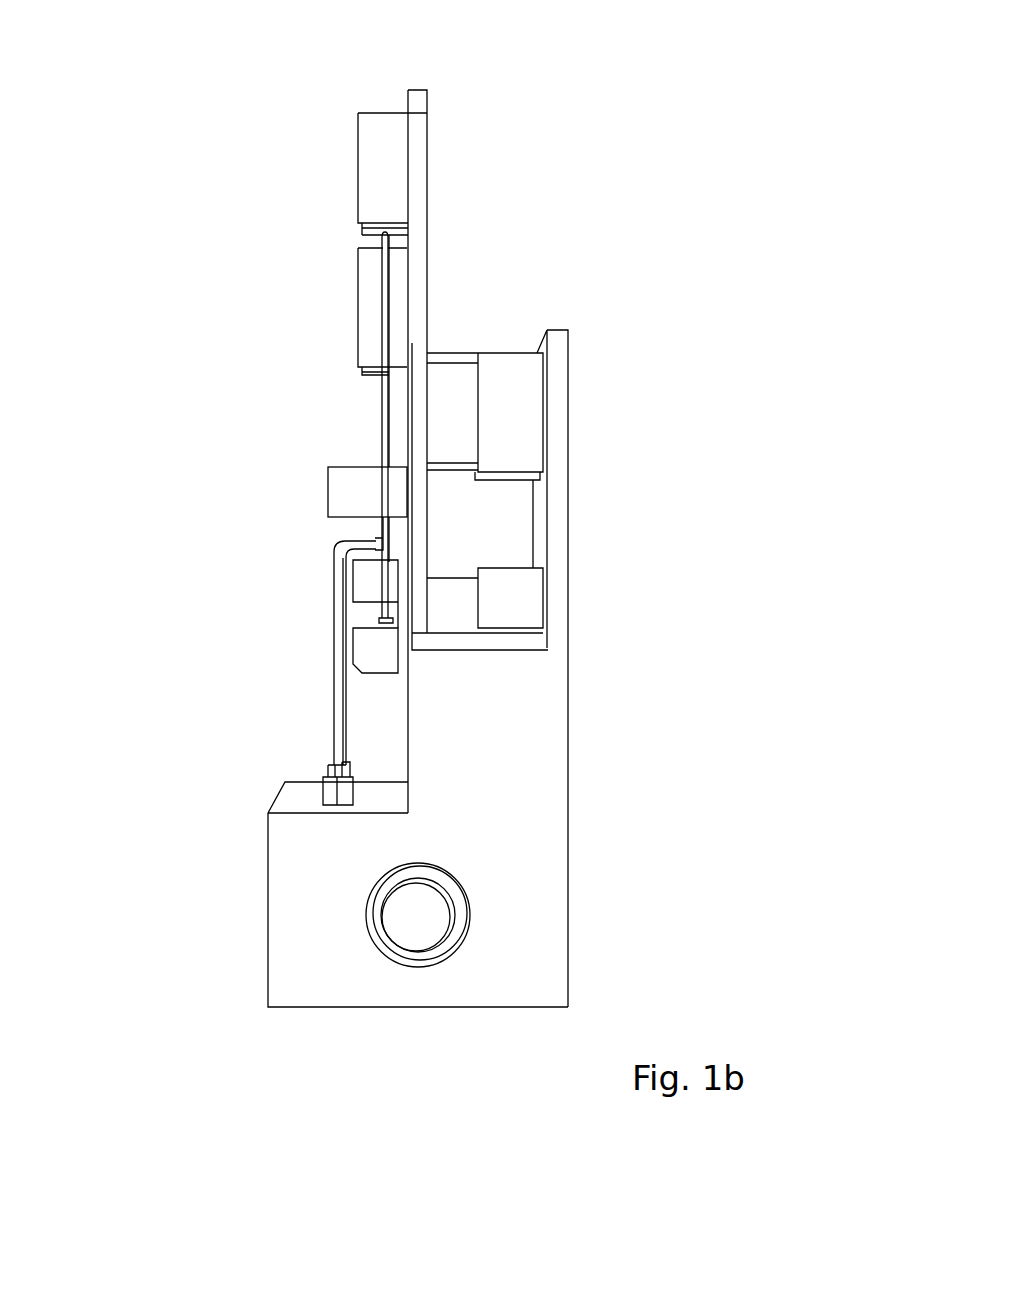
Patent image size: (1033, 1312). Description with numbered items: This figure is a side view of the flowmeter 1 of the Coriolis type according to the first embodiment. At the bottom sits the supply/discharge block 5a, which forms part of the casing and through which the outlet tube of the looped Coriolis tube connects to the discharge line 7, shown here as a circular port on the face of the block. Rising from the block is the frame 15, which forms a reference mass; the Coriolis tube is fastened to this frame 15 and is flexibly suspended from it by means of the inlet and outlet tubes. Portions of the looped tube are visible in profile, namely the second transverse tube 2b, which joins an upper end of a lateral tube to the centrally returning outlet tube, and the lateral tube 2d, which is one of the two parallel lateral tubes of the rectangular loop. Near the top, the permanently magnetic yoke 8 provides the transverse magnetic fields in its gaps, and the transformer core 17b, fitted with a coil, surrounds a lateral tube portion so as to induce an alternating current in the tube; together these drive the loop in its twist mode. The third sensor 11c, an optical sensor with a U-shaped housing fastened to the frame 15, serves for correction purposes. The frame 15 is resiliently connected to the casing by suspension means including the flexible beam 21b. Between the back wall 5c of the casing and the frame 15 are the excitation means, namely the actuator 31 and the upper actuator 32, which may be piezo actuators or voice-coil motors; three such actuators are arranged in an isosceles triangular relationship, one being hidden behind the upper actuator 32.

The flowmeter 1 is at (708, 135).
The frame 15 is at (413, 175).
The permanently magnetic yoke 8 is at (377, 155).
The second transverse tube 2b is at (380, 238).
The upper actuator 32 is at (508, 383).
The transformer core 17b is at (350, 497).
The back wall 5c is at (558, 477).
The suspension element 21b is at (413, 512).
The actuator 31 is at (500, 585).
The lateral tube 2d is at (388, 613).
The third sensor 11c is at (385, 655).
The supply/discharge block 5a is at (297, 892).
The discharge line 7 is at (437, 927).